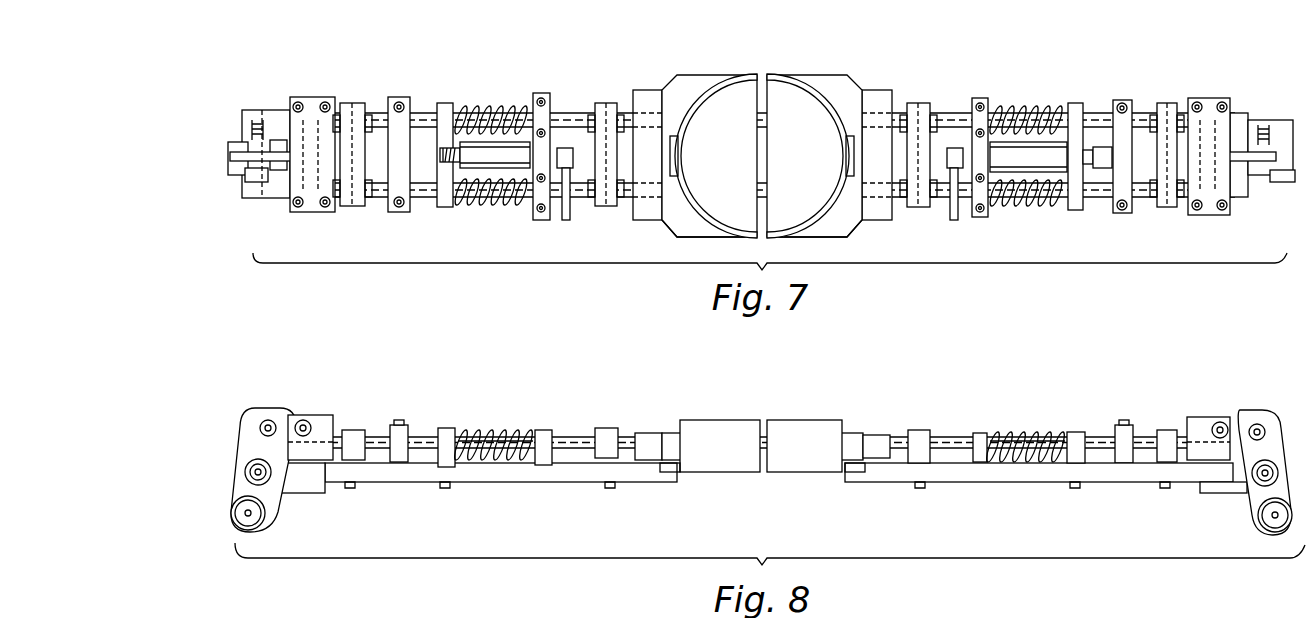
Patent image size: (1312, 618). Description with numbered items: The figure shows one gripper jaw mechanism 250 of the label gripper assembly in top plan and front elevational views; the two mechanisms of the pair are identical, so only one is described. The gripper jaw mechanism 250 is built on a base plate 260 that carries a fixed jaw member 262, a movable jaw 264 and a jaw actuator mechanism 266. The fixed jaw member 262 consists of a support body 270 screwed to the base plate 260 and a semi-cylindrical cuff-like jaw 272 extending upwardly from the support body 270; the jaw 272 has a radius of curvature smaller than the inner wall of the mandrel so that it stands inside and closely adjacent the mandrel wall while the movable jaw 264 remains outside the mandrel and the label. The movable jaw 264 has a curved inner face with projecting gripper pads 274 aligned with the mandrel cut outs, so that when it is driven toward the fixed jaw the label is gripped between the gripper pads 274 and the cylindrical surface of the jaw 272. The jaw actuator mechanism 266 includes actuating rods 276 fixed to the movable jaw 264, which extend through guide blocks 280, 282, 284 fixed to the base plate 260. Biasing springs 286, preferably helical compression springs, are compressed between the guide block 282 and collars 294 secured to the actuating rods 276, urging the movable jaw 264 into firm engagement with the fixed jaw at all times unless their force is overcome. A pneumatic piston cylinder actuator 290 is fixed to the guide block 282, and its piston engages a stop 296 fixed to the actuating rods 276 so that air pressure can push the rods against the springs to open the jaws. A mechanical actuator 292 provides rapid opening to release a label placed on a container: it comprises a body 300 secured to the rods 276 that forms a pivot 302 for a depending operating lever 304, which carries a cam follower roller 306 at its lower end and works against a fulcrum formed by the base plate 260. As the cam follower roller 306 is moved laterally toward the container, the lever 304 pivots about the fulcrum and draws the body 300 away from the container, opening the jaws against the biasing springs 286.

In FIG. 7, the gripper jaw mechanism 250 is at (431, 68).
In FIG. 7, the base plate 260 is at (378, 170).
In FIG. 8, the base plate 260 is at (384, 474).
In FIG. 7, the fixed jaw member 262 is at (695, 229).
In FIG. 8, the fixed jaw member 262 is at (725, 477).
In FIG. 7, the movable jaw 264 is at (646, 88).
In FIG. 8, the movable jaw 264 is at (650, 421).
In FIG. 7, the jaw actuator mechanism 266 is at (484, 92).
In FIG. 8, the jaw actuator mechanism 266 is at (457, 419).
In FIG. 7, the support body 270 is at (690, 82).
In FIG. 7, the semi-cylindrical cuff-like jaw 272 is at (822, 216).
In FIG. 8, the semi-cylindrical cuff-like jaw 272 is at (700, 427).
In FIG. 7, the gripper pads 274 is at (704, 90).
In FIG. 7, the actuating rods 276 is at (574, 117).
In FIG. 8, the guide block 280 is at (603, 428).
In FIG. 7, the guide block 282 is at (447, 110).
In FIG. 8, the guide block 282 is at (447, 430).
In FIG. 8, the guide block 284 is at (350, 430).
In FIG. 7, the biasing springs 286 is at (488, 208).
In FIG. 8, the biasing springs 286 is at (497, 462).
In FIG. 7, the pneumatic piston cylinder actuator 290 is at (774, 156).
In FIG. 8, the pneumatic piston cylinder actuator 290 is at (484, 430).
In FIG. 8, the mechanical actuator 292 is at (266, 402).
In FIG. 7, the collars 294 is at (548, 215).
In FIG. 8, the collars 294 is at (550, 468).
In FIG. 7, the stop 296 is at (395, 118).
In FIG. 8, the stop 296 is at (397, 428).
In FIG. 7, the body 300 is at (310, 208).
In FIG. 8, the body 300 is at (322, 424).
In FIG. 7, the pivot 302 is at (255, 182).
In FIG. 8, the pivot 302 is at (270, 416).
In FIG. 8, the operating lever 304 is at (248, 450).
In FIG. 8, the cam follower roller 306 is at (236, 517).